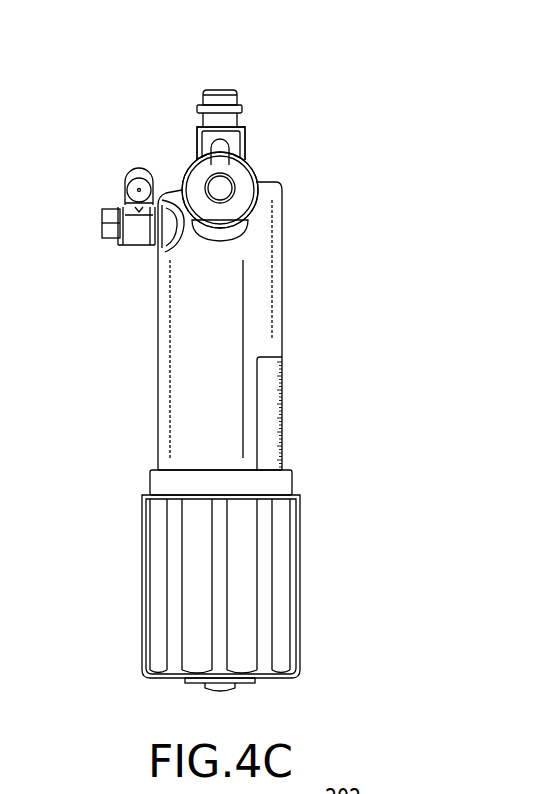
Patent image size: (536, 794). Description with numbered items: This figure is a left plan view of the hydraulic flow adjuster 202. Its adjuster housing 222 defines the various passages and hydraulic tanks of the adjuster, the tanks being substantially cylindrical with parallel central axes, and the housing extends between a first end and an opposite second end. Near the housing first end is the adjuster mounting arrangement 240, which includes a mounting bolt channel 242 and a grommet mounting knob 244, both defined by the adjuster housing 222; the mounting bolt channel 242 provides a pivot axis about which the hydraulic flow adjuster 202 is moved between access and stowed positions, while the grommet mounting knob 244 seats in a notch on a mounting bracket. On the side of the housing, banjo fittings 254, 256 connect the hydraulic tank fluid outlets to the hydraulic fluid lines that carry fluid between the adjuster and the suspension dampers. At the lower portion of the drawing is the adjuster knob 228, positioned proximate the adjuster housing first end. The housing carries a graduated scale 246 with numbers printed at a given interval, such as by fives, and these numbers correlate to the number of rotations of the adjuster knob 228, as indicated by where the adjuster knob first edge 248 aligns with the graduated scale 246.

The hydraulic flow adjuster 202 is at (296, 58).
The adjuster housing 222 is at (283, 272).
The adjuster knob 228 is at (300, 513).
The adjuster mounting arrangement 240 is at (248, 92).
The mounting bolt channel 242 is at (201, 169).
The grommet mounting knob 244 is at (230, 90).
The graduated scale 246 is at (283, 362).
The adjuster knob first edge 248 is at (283, 468).
The banjo fitting 254 is at (127, 172).
The banjo fitting 256 is at (120, 192).